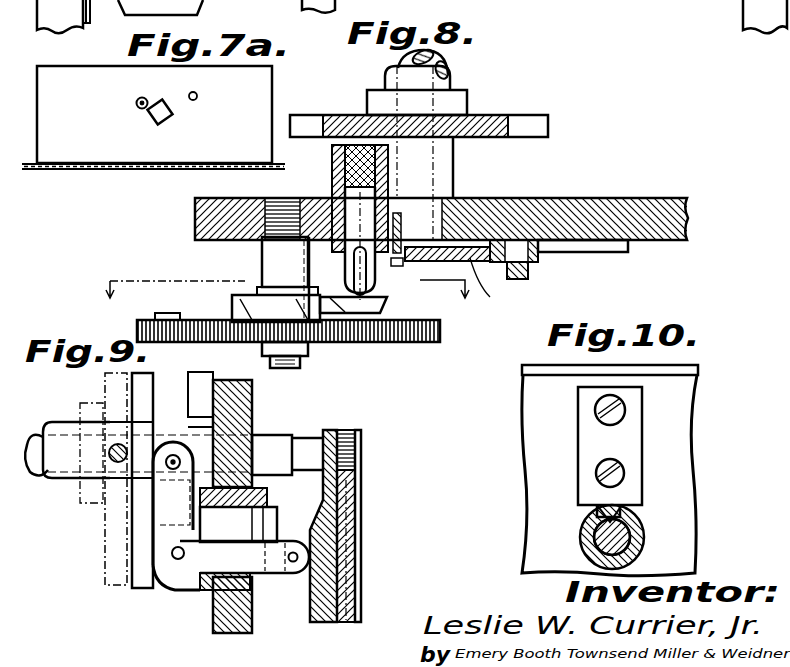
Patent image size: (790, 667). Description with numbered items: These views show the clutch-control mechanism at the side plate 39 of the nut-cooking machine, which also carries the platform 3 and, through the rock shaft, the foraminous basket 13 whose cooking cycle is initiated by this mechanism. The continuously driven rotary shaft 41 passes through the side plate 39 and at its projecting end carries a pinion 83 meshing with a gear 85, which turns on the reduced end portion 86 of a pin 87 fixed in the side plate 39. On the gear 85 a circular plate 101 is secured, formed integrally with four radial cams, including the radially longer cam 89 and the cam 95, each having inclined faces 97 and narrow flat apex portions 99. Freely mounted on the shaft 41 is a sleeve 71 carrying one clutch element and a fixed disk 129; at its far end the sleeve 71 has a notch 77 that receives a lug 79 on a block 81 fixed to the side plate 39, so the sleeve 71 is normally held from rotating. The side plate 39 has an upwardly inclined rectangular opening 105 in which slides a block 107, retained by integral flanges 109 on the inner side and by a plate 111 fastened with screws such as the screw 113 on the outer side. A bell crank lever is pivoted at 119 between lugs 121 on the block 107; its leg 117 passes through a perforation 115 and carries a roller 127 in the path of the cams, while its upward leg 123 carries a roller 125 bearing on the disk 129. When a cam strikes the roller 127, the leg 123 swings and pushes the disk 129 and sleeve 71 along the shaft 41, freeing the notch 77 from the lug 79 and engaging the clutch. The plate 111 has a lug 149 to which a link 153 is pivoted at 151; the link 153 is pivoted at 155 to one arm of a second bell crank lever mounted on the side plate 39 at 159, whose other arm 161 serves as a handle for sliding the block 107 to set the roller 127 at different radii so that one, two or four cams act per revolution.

In FIG. 7A, the platform 3 is at (97, 169).
In FIG. 8, the foraminous basket 13 is at (284, 301).
In FIG. 7A, the side plate 39 is at (73, 152).
In FIG. 8, the side plate 39 is at (597, 197).
In FIG. 9, the side plate 39 is at (262, 396).
In FIG. 10, the side plate 39 is at (702, 405).
In FIG. 8, the rotary shaft 41 is at (447, 64).
In FIG. 9, the rotary shaft 41 is at (46, 481).
In FIG. 10, the rotary shaft 41 is at (598, 532).
In FIG. 8, the sleeve 71 is at (449, 77).
In FIG. 9, the sleeve 71 is at (63, 480).
In FIG. 10, the sleeve 71 is at (587, 548).
In FIG. 10, the notch 77 is at (633, 512).
In FIG. 10, the lug 79 is at (608, 514).
In FIG. 10, the block 81 is at (583, 427).
In FIG. 8, the pinion 83 is at (443, 338).
In FIG. 8, the gear 85 is at (372, 342).
In FIG. 9, the gear 85 is at (360, 520).
In FIG. 7A, the reduced end portion 86 is at (137, 106).
In FIG. 8, the reduced end portion 86 is at (232, 302).
In FIG. 7A, the pin 87 is at (137, 99).
In FIG. 8, the pin 87 is at (268, 250).
In FIG. 9, the cam 89 is at (357, 490).
In FIG. 8, the cam 95 is at (335, 310).
In FIG. 9, the cam 95 is at (359, 577).
In FIG. 9, the inclined faces 97 is at (315, 603).
In FIG. 9, the flat apex portions 99 is at (313, 610).
In FIG. 8, the circular plate 101 is at (395, 313).
In FIG. 9, the circular plate 101 is at (327, 430).
In FIG. 7A, the rectangular opening 105 is at (152, 118).
In FIG. 8, the rectangular opening 105 is at (477, 197).
In FIG. 9, the rectangular opening 105 is at (291, 456).
In FIG. 8, the block 107 is at (402, 196).
In FIG. 9, the block 107 is at (212, 510).
In FIG. 9, the flanges 109 is at (203, 494).
In FIG. 8, the plate 111 is at (352, 258).
In FIG. 9, the plate 111 is at (278, 593).
In FIG. 8, the screw 113 is at (402, 222).
In FIG. 9, the through perforation 115 is at (185, 553).
In FIG. 8, the leg 117 is at (327, 237).
In FIG. 9, the leg 117 is at (216, 622).
In FIG. 9, the pivot 119 is at (162, 583).
In FIG. 8, the lugs 121 is at (335, 160).
In FIG. 9, the lugs 121 is at (178, 600).
In FIG. 8, the leg 123 is at (361, 220).
In FIG. 9, the leg 123 is at (160, 527).
In FIG. 8, the roller 125 is at (355, 118).
In FIG. 9, the roller 125 is at (160, 430).
In FIG. 8, the roller 127 is at (383, 307).
In FIG. 9, the roller 127 is at (277, 573).
In FIG. 8, the disk 129 is at (503, 117).
In FIG. 9, the disk 129 is at (100, 581).
In FIG. 8, the lug 149 is at (470, 262).
In FIG. 8, the pivot 151 is at (470, 258).
In FIG. 8, the link 153 is at (494, 283).
In FIG. 9, the link 153 is at (284, 500).
In FIG. 8, the pivot 155 is at (528, 268).
In FIG. 7A, the pivot 159 is at (197, 93).
In FIG. 8, the arm 161 is at (604, 253).